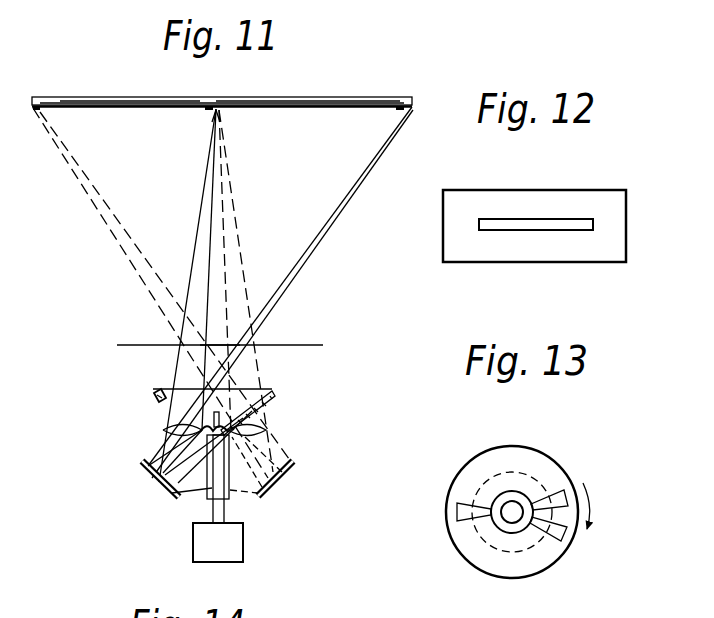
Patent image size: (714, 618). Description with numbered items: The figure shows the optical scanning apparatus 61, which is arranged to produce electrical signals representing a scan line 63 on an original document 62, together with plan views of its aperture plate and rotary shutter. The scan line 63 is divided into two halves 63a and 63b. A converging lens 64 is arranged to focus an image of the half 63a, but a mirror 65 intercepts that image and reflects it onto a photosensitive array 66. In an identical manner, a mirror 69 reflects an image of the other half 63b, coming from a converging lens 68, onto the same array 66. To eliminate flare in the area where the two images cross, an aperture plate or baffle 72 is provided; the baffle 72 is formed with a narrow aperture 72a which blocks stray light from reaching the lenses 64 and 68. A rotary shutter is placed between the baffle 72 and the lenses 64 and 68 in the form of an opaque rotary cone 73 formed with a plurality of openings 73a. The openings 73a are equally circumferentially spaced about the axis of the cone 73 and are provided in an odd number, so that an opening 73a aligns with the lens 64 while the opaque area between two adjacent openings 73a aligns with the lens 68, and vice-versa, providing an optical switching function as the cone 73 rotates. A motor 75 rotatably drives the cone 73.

In FIG. 11, the optical scanning apparatus 61 is at (70, 230).
In FIG. 11, the original document 62 is at (46, 100).
In FIG. 11, the scan line 63 is at (190, 143).
In FIG. 11, the half of scan line 63a is at (124, 107).
In FIG. 11, the half of scan line 63b is at (318, 107).
In FIG. 11, the converging lens 64 is at (266, 432).
In FIG. 11, the mirror 65 is at (289, 474).
In FIG. 11, the photosensitive array 66 is at (229, 500).
In FIG. 11, the converging lens 68 is at (163, 432).
In FIG. 11, the mirror 69 is at (153, 481).
In FIG. 11, the aperture plate or baffle 72 is at (318, 345).
In FIG. 12, the aperture plate or baffle 72 is at (597, 195).
In FIG. 11, the narrow aperture 72a is at (218, 326).
In FIG. 12, the narrow aperture 72a is at (590, 224).
In FIG. 11, the opaque rotary cone 73 is at (275, 393).
In FIG. 13, the opaque rotary cone 73 is at (537, 447).
In FIG. 11, the openings 73a is at (188, 412).
In FIG. 13, the openings 73a is at (576, 490).
In FIG. 11, the motor 75 is at (238, 558).